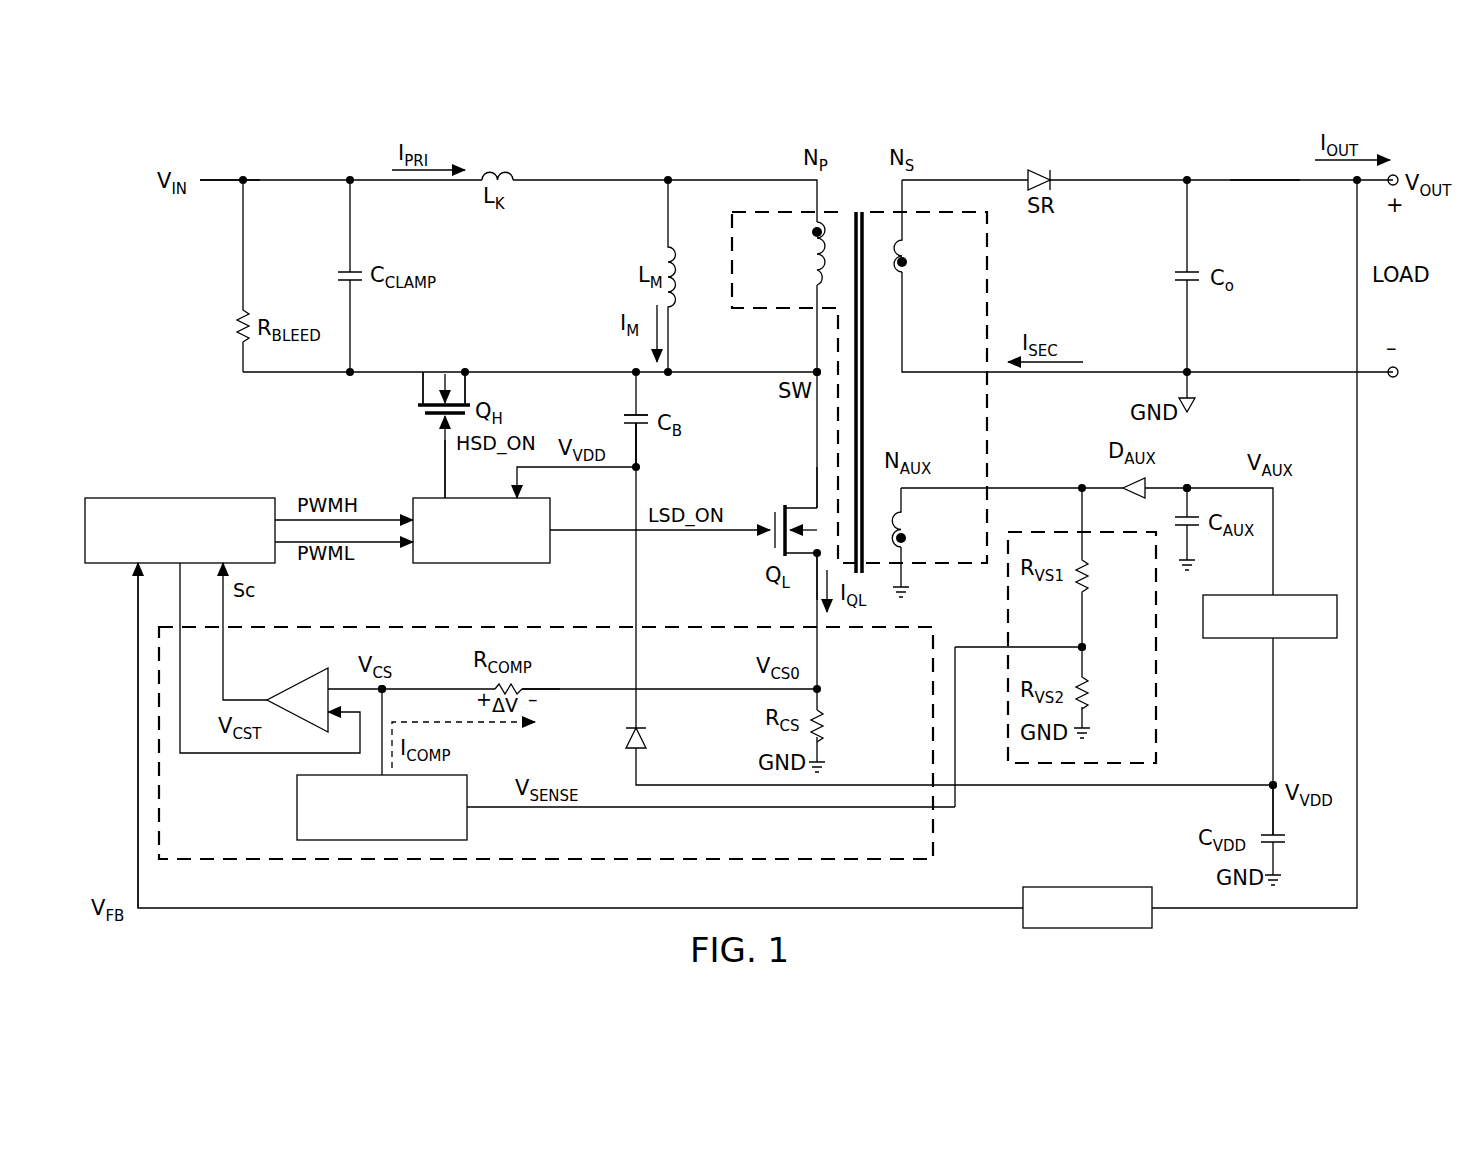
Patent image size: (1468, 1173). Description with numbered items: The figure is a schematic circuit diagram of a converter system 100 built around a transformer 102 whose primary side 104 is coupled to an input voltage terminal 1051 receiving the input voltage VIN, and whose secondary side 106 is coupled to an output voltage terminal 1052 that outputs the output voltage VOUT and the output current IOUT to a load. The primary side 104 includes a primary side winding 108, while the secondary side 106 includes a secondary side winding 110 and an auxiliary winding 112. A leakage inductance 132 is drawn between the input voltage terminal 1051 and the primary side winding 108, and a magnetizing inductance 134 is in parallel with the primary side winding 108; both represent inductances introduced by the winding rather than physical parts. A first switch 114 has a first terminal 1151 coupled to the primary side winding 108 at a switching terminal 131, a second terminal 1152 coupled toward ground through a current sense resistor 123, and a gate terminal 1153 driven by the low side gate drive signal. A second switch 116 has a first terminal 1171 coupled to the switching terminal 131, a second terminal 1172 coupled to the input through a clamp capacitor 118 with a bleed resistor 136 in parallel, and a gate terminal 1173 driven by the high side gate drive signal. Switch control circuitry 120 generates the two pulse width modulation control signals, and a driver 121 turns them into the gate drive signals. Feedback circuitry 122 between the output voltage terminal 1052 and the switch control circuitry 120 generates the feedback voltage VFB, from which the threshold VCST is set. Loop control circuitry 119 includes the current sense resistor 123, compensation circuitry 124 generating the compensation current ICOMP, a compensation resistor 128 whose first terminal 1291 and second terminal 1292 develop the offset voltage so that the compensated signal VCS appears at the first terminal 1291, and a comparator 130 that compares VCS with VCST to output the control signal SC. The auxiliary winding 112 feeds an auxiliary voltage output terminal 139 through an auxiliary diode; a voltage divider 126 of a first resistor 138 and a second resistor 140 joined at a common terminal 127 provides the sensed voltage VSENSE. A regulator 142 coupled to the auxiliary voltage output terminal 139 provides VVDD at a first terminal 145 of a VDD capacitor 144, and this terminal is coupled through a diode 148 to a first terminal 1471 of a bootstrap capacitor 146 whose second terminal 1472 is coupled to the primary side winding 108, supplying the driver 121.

The converter system 100 is at (133, 150).
The input voltage terminal 1051 is at (223, 180).
The leakage inductance 132 is at (484, 166).
The primary side 104 is at (781, 158).
The secondary side 106 is at (931, 158).
The output voltage terminal 1052 is at (1263, 180).
The clamp capacitor 118 is at (338, 277).
The bleed resistor 136 is at (238, 326).
The magnetizing inductance 134 is at (664, 254).
The primary side winding 108 is at (811, 233).
The secondary side winding 110 is at (908, 252).
The transformer 102 is at (991, 272).
The second terminal of second switch 1172 is at (420, 371).
The first terminal of second switch 1171 is at (467, 371).
The switching terminal 131 is at (815, 371).
The bootstrap capacitor 146 is at (624, 421).
The second terminal of bootstrap capacitor 1472 is at (640, 412).
The second switch 116 is at (432, 420).
The gate terminal of second switch 1173 is at (440, 472).
The first terminal of bootstrap capacitor 1471 is at (640, 455).
The first terminal of first switch 1151 is at (814, 473).
The gate terminal of first switch 1153 is at (768, 522).
The auxiliary voltage output terminal 139 is at (1190, 487).
The switch control circuitry 120 is at (170, 497).
The driver 121 is at (480, 564).
The first switch 114 is at (776, 542).
The auxiliary winding 112 is at (905, 524).
The first resistor 138 is at (1087, 578).
The common terminal 127 is at (1078, 645).
The regulator 142 is at (1300, 640).
The second terminal of first switch 1152 is at (814, 596).
The comparator 130 is at (285, 683).
The first terminal of compensation resistor 1291 is at (445, 688).
The compensation resistor 128 is at (548, 678).
The second terminal of compensation resistor 1292 is at (560, 692).
The diode 148 is at (647, 736).
The current sense resistor 123 is at (824, 725).
The second resistor 140 is at (1088, 698).
The voltage divider 126 is at (1160, 686).
The compensation circuitry 124 is at (296, 812).
The loop control circuitry 119 is at (935, 830).
The first terminal of VDD capacitor 145 is at (1271, 818).
The VDD capacitor 144 is at (1286, 838).
The feedback circuitry 122 is at (1087, 929).